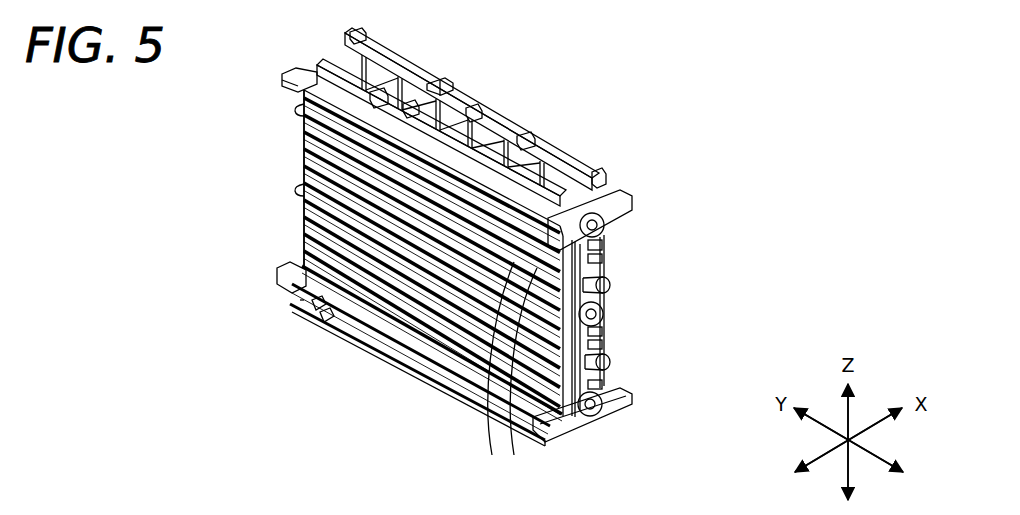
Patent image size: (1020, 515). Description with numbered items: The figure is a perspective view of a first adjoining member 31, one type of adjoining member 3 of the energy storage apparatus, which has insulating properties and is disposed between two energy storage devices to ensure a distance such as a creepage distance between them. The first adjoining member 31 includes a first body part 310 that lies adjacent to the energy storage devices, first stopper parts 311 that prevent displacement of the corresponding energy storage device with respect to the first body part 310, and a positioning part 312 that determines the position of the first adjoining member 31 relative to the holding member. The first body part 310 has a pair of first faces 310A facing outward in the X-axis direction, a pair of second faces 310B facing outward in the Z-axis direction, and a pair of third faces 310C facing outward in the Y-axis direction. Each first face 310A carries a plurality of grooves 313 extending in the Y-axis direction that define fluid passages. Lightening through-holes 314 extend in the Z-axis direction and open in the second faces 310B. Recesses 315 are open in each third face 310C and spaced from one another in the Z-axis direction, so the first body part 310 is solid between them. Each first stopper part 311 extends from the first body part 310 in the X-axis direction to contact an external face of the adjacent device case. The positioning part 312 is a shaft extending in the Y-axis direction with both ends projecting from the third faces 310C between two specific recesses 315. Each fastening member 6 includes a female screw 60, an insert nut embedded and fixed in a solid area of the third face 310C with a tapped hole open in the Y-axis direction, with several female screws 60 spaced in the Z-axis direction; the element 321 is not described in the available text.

The first adjoining member 31 is at (449, 258).
The adjoining member 3 is at (472, 82).
The first body part 310 is at (302, 164).
The first faces 310A is at (302, 252).
The second faces 310B is at (388, 369).
The third faces 310C is at (298, 212).
The first stopper part 311 is at (352, 36).
The positioning part 312 is at (302, 108).
The grooves 313 is at (316, 303).
The lightening through-holes 314 is at (398, 96).
The recesses 315 is at (607, 262).
The fastening member 6 is at (517, 387).
The female screw 60 is at (548, 414).
The bottom member 321 is at (325, 407).